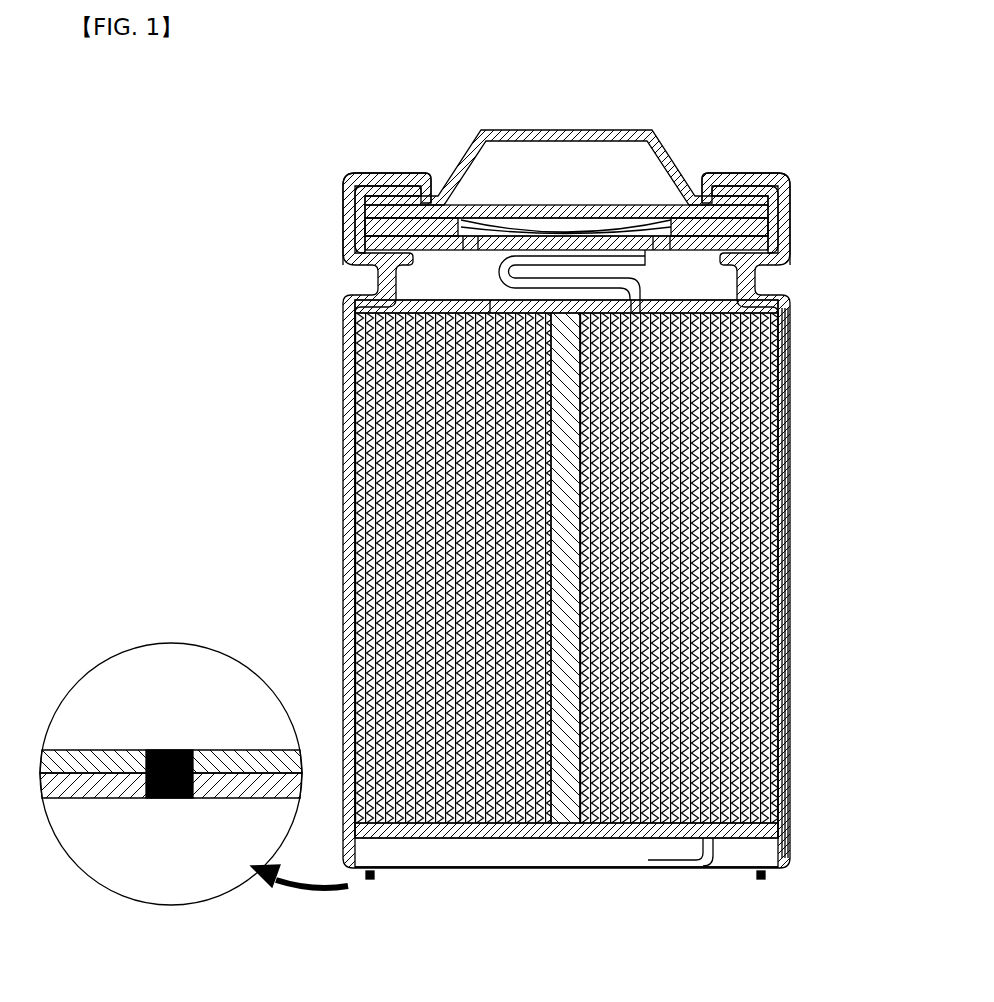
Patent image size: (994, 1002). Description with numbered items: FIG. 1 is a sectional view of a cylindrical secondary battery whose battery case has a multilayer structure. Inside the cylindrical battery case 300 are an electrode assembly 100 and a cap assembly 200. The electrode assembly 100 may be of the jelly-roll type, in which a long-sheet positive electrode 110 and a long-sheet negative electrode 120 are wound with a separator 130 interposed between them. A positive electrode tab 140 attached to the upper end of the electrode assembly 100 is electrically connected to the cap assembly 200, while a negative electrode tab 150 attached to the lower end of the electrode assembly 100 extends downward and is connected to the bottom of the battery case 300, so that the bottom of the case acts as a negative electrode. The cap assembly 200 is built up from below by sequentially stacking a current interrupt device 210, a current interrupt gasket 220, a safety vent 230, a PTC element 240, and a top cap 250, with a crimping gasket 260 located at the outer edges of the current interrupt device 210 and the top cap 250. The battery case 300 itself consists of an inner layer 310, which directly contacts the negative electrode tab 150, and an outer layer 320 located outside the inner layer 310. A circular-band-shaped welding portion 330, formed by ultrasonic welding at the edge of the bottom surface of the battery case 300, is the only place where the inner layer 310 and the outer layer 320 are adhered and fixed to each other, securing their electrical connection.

The electrode assembly 100 is at (880, 258).
The positive electrode 110 is at (782, 310).
The negative electrode 120 is at (782, 418).
The separator 130 is at (782, 345).
The positive electrode tab 140 is at (740, 262).
The negative electrode tab 150 is at (757, 850).
The cap assembly 200 is at (474, 210).
The current interrupt device 210 is at (504, 272).
The current interrupt gasket 220 is at (337, 230).
The safety vent 230 is at (337, 208).
The PTC element 240 is at (336, 188).
The top cap 250 is at (463, 125).
The crimping gasket 260 is at (387, 166).
The battery case 300 is at (335, 414).
The inner layer 310 is at (82, 742).
The outer layer 320 is at (80, 790).
The welding portion 330 is at (157, 742).